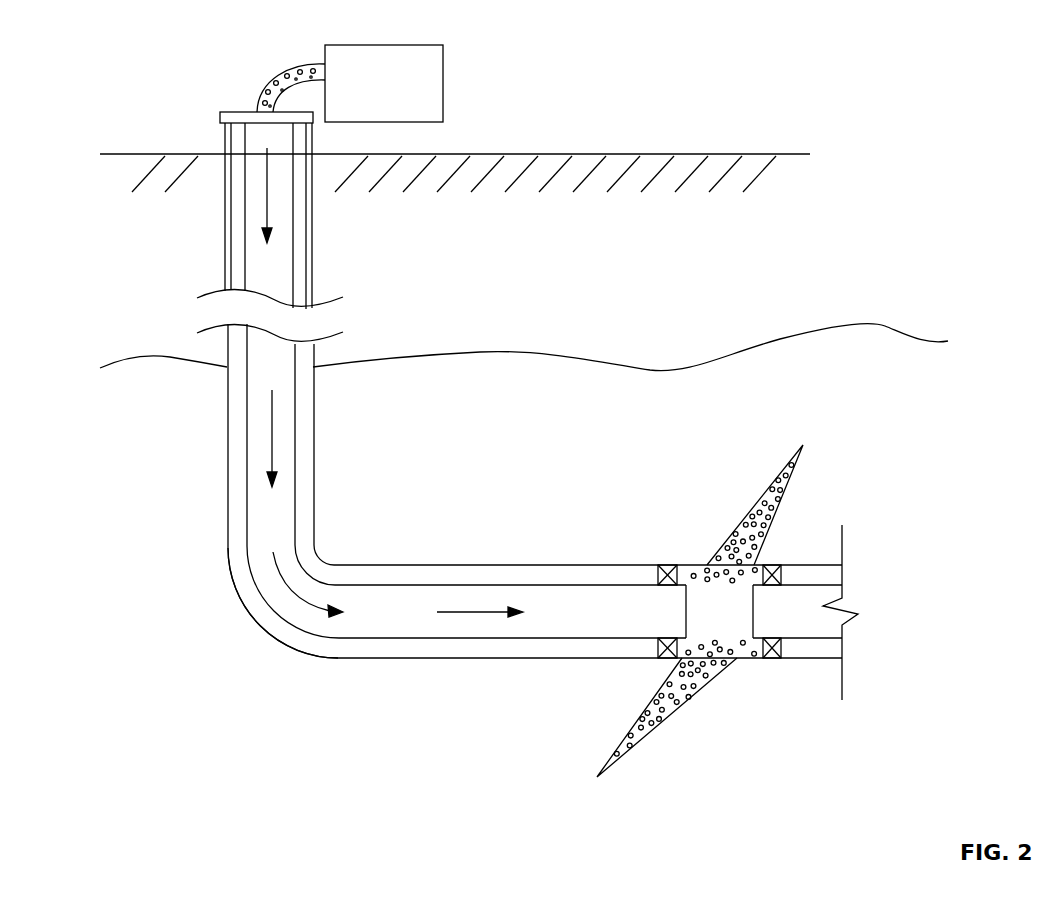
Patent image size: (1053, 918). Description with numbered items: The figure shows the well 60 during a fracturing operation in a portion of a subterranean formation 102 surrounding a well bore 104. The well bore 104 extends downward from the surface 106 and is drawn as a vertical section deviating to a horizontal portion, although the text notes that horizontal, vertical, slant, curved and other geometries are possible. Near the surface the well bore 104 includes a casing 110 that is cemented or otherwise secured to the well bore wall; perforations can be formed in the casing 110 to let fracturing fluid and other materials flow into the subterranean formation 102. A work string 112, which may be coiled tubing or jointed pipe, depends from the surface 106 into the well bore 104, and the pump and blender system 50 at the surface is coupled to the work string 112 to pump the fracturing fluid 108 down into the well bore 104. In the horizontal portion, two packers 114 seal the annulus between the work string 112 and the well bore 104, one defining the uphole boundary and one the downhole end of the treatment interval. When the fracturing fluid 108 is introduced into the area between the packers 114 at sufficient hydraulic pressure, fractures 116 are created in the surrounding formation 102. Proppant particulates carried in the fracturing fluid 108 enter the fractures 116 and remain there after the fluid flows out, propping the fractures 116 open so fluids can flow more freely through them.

The pump and blender system 50 is at (384, 83).
The well 60 is at (242, 650).
The subterranean formation 102 is at (524, 360).
The well bore 104 is at (237, 243).
The surface 106 is at (625, 154).
The fracturing fluid 108 is at (273, 85).
The casing 110 is at (229, 280).
The work string 112 is at (248, 480).
The packers 114 is at (667, 565).
The fractures 116 is at (739, 506).